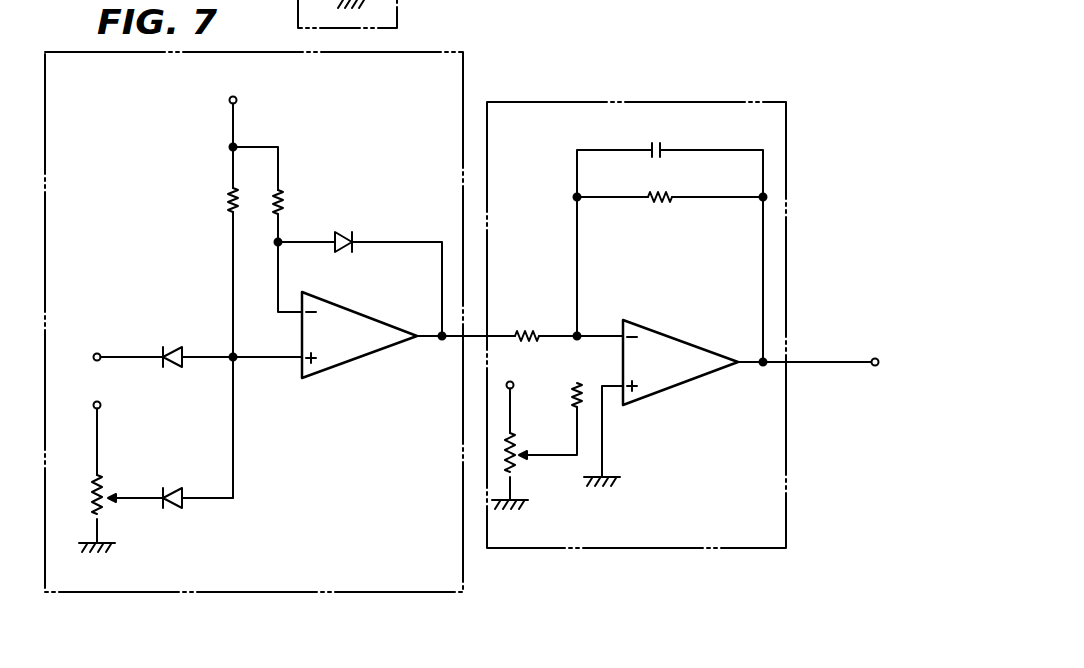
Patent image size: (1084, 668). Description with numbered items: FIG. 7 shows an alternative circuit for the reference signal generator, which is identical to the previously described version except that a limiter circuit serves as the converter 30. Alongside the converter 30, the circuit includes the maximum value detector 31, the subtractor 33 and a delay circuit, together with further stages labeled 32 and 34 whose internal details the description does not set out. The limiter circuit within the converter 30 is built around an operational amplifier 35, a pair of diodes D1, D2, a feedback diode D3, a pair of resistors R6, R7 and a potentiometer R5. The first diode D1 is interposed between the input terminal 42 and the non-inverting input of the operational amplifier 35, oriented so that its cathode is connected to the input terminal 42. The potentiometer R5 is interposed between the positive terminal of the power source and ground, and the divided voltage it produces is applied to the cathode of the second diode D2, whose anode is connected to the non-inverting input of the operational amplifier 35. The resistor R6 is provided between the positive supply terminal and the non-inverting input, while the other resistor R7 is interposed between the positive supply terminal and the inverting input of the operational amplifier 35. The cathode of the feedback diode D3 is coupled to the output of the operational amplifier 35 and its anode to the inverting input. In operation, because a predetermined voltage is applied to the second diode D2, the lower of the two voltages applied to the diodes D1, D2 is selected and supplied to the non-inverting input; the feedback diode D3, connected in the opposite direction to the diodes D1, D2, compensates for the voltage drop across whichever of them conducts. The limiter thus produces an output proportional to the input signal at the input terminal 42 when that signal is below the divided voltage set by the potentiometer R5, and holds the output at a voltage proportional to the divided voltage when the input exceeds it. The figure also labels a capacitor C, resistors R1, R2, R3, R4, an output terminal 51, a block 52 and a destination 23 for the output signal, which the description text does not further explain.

The valve control signal generator 23 is at (873, 406).
The converter 30 is at (463, 76).
The maximum value detector 31 is at (614, 304).
The integrator circuit 32 is at (614, 304).
The subtractor 33 is at (622, 102).
The operational amplifier 34 is at (680, 337).
The operational amplifier 35 is at (365, 316).
The input terminal 42 is at (97, 353).
The output terminal 51 is at (875, 358).
The circuit block 52 is at (422, 3).
The resistor R1 is at (530, 328).
The feedback resistor R2 is at (662, 192).
The potentiometer R3 is at (516, 450).
The resistor R4 is at (570, 390).
The potentiometer R5 is at (88, 499).
The resistor R6 is at (228, 192).
The resistor R7 is at (283, 200).
The capacitor C is at (660, 143).
The first diode D1 is at (166, 346).
The second diode D2 is at (164, 488).
The feedback diode D3 is at (351, 232).